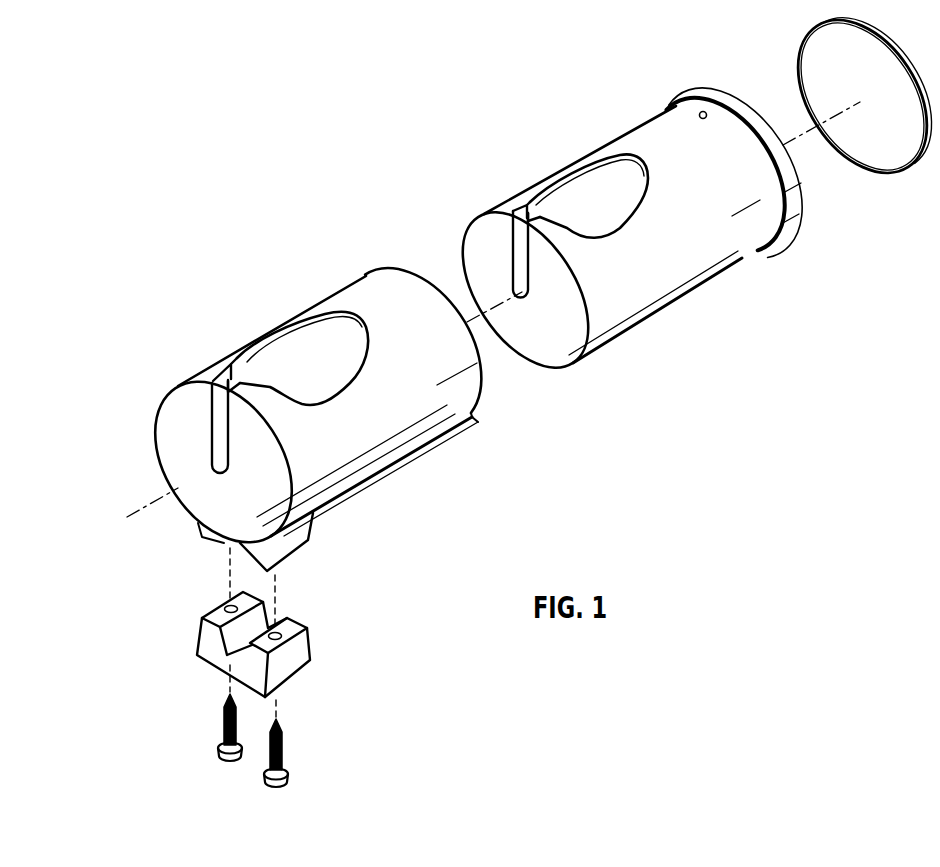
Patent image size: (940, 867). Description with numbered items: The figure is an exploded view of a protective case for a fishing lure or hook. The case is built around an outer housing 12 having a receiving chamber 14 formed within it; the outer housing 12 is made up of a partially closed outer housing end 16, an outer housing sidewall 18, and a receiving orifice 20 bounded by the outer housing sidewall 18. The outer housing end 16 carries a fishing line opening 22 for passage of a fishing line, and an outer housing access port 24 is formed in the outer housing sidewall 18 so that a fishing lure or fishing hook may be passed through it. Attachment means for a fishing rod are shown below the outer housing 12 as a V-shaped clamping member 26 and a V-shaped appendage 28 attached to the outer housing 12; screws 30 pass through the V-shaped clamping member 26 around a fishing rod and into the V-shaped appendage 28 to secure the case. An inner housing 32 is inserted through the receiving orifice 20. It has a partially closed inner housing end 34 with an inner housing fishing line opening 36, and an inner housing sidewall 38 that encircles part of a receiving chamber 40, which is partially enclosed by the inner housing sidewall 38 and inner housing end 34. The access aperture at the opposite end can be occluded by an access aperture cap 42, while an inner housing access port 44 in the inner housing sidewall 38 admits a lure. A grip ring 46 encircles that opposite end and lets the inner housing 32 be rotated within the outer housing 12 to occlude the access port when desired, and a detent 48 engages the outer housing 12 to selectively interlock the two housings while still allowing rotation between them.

The outer housing 12 is at (340, 274).
The receiving chamber 14 is at (291, 353).
The outer housing end 16 is at (170, 455).
The outer housing sidewall 18 is at (383, 450).
The receiving orifice 20 is at (372, 273).
The fishing line opening 22 is at (217, 417).
The outer housing access port 24 is at (321, 311).
The V-shaped clamping member 26 is at (297, 667).
The V-shaped appendage 28 is at (292, 542).
The screws 30 is at (226, 729).
The inner housing 32 is at (600, 126).
The inner housing end 34 is at (538, 330).
The inner housing fishing line opening 36 is at (510, 262).
The inner housing sidewall 38 is at (667, 270).
The receiving chamber 40 is at (575, 190).
The access aperture cap 42 is at (887, 160).
The inner housing access port 44 is at (634, 168).
The grip ring 46 is at (745, 115).
The detent 48 is at (710, 110).